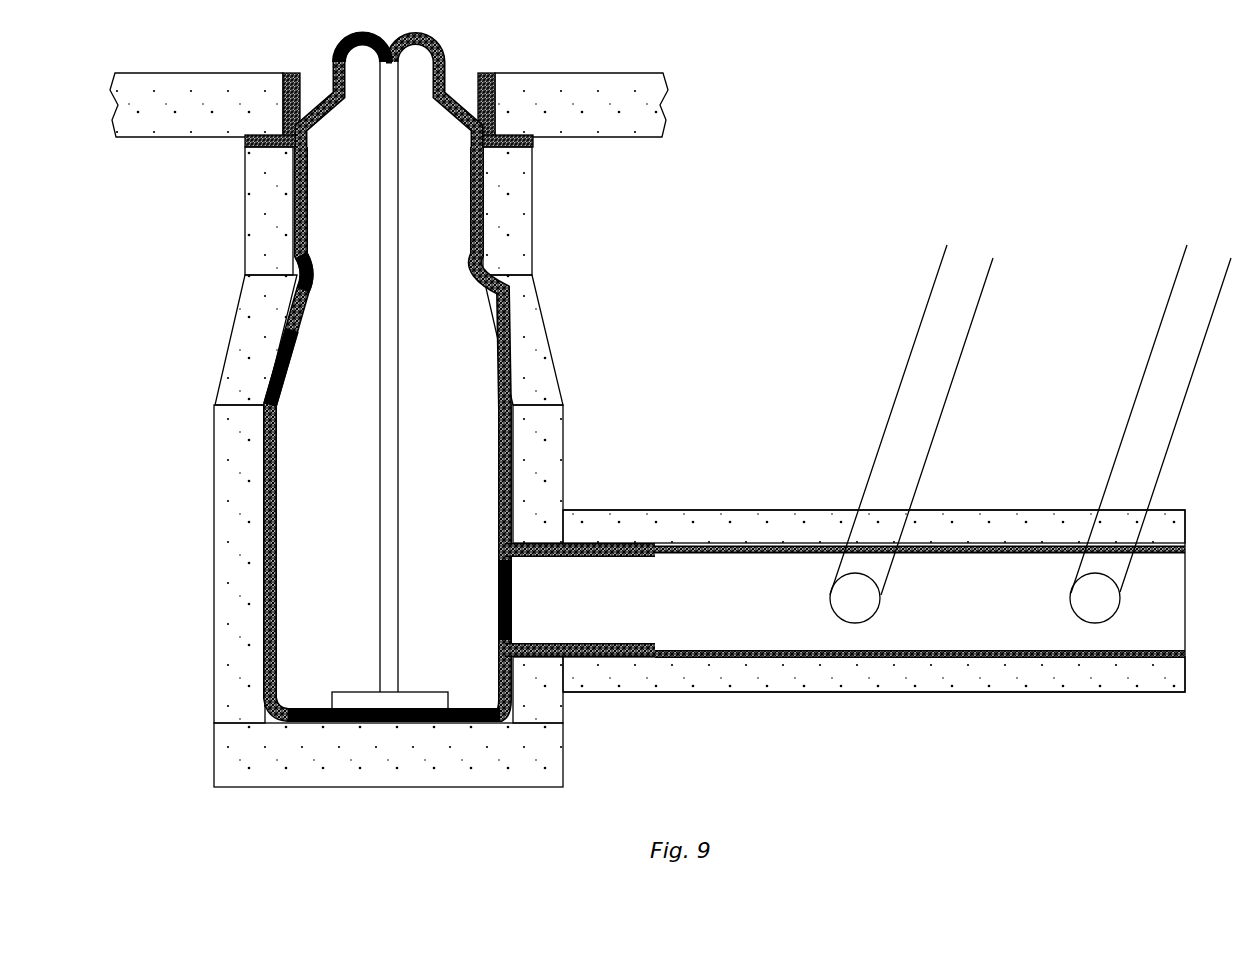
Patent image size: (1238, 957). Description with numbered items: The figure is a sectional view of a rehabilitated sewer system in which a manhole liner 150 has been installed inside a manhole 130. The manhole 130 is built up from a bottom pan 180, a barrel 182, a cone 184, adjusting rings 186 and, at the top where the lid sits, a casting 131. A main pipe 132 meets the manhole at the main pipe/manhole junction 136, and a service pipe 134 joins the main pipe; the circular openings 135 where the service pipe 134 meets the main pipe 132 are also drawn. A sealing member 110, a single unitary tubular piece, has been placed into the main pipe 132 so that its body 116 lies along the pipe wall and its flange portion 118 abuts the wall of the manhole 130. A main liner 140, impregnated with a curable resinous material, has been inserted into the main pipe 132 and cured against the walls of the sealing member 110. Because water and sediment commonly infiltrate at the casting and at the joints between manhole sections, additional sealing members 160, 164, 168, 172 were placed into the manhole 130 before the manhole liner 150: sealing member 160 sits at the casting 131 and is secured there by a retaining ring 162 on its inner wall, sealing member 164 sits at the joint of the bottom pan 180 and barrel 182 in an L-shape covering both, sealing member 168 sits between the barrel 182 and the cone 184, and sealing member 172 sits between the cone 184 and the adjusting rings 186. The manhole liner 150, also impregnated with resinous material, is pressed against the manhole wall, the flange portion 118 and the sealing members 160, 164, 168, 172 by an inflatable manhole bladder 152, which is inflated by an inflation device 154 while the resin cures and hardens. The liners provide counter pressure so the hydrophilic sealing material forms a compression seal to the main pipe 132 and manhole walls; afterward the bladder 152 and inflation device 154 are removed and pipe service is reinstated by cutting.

The sealing member 110 is at (620, 545).
The body 116 is at (616, 658).
The flange portion 118 is at (497, 537).
The manhole 130 is at (548, 341).
The casting 131 is at (486, 78).
The main pipe 132 is at (980, 510).
The service pipe 134 is at (884, 433).
The conduit 135 is at (830, 598).
The main pipe/manhole junction 136 is at (518, 545).
The main liner 140 is at (724, 656).
The manhole liner 150 is at (262, 443).
The inflatable manhole bladder 152 is at (278, 496).
The inflation device 154 is at (379, 632).
The sealing member 160 is at (325, 82).
The retaining ring 162 is at (455, 74).
The sealing member 164 is at (262, 717).
The sealing member 168 is at (267, 388).
The sealing member 172 is at (299, 283).
The bottom pan 180 is at (216, 756).
The barrel 182 is at (218, 522).
The cone 184 is at (245, 336).
The adjusting rings 186 is at (250, 214).